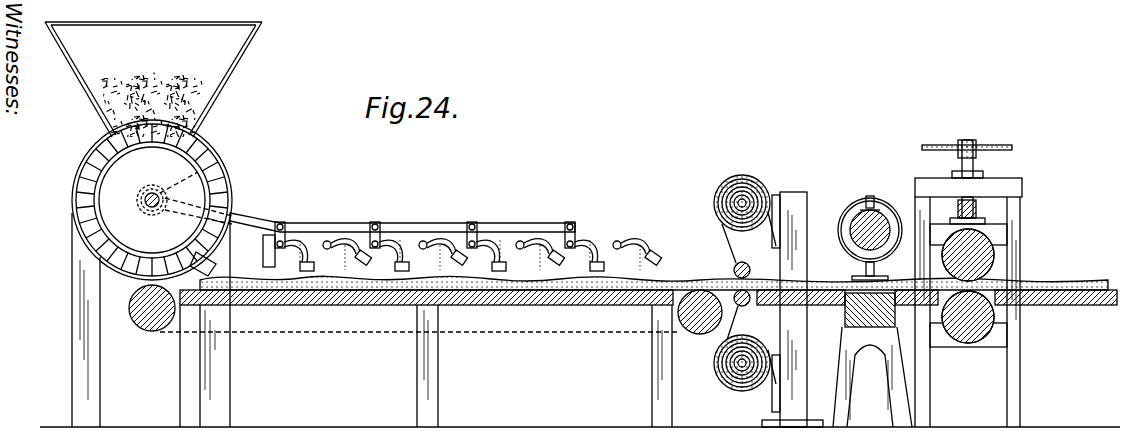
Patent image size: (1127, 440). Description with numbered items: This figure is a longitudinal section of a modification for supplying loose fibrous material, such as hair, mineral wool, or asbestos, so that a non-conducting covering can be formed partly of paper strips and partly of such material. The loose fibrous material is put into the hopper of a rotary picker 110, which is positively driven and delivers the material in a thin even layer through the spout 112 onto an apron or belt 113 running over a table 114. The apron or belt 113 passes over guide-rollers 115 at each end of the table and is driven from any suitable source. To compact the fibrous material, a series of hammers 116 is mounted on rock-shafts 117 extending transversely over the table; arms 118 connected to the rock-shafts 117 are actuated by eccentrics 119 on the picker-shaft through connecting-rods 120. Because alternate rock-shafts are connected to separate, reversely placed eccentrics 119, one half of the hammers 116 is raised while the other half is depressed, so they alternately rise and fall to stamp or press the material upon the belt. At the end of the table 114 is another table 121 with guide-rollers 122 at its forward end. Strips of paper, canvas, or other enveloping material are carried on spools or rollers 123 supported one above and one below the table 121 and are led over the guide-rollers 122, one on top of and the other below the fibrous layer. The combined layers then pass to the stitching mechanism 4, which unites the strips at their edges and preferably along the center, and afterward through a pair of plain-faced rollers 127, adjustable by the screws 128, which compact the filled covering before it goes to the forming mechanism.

The stitching mechanism 4 is at (858, 261).
The rotary picker 110 is at (165, 200).
The spout 112 is at (218, 264).
The apron or belt 113 is at (342, 293).
The table 114 is at (492, 300).
The guide-rollers 115 is at (150, 331).
The hammers 116 is at (330, 247).
The rock-shafts 117 is at (378, 243).
The arms 118 is at (288, 226).
The eccentrics 119 is at (226, 172).
The connecting-rods 120 is at (452, 228).
The table 121 is at (796, 300).
The guide-rollers 122 is at (734, 270).
The spools or rollers 123 is at (714, 200).
The plain-faced rollers 127 is at (993, 262).
The screws 128 is at (974, 162).